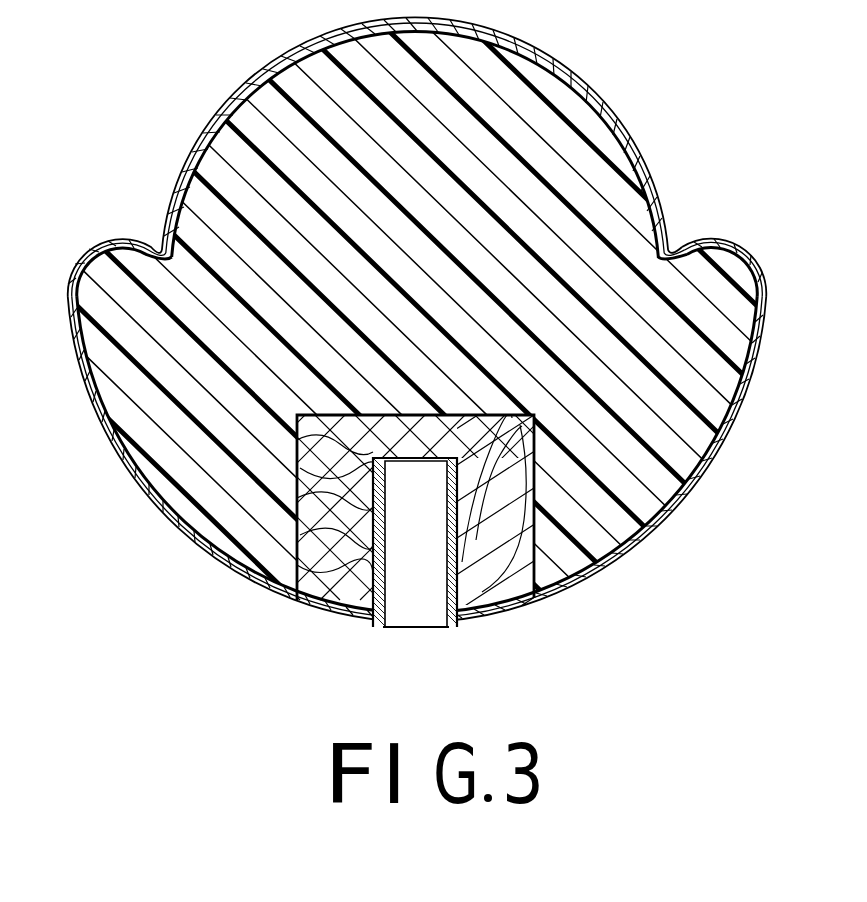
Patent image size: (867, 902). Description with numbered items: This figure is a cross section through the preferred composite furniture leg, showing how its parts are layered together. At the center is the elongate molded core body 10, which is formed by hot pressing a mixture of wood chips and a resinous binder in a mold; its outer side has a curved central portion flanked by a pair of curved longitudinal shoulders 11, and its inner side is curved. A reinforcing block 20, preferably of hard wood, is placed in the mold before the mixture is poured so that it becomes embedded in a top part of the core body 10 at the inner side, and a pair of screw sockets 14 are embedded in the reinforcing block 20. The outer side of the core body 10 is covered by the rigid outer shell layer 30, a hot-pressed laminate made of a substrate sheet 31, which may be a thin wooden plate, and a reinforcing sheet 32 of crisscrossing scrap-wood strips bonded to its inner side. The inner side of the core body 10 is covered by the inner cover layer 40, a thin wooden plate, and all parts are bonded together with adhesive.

The molded core body 10 is at (216, 542).
The curved longitudinal shoulders 11 is at (70, 297).
The screw sockets 14 is at (446, 598).
The reinforcing block 20 is at (333, 592).
The outer shell layer 30 is at (464, 138).
The substrate sheet 31 is at (580, 80).
The reinforcing sheet 32 is at (608, 124).
The inner cover layer 40 is at (610, 576).